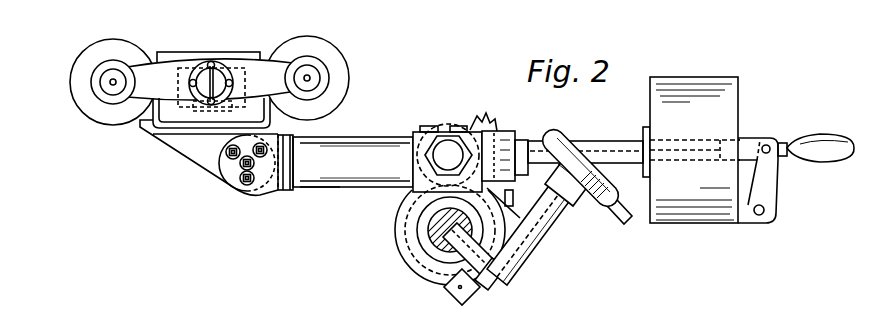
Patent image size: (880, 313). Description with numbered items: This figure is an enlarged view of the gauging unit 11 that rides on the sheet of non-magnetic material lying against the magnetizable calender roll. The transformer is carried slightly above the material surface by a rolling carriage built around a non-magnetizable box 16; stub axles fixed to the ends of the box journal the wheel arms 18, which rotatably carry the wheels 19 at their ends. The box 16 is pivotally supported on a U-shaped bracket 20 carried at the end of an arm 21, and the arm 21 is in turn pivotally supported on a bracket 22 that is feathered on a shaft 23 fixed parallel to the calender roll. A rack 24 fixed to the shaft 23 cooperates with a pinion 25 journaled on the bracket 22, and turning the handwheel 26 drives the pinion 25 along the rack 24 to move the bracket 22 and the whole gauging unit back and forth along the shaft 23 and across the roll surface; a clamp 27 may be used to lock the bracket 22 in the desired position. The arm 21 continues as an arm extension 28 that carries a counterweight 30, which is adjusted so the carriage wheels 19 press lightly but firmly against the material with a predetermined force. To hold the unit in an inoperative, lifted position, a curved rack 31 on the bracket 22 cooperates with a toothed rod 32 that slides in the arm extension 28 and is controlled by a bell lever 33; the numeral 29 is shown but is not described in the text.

The gauging unit 11 is at (335, 198).
The non-magnetizable box 16 is at (230, 52).
The wheel arms 18 is at (118, 158).
The wheels 19 is at (124, 40).
The U-shaped bracket 20 is at (158, 138).
The arm 21 is at (340, 136).
The bracket 22 is at (395, 210).
The shaft 23 is at (432, 226).
The rack 24 is at (455, 255).
The pinion 25 is at (505, 277).
The handwheel 26 is at (600, 198).
The clamp 27 is at (598, 168).
The arm extension 28 is at (585, 140).
The clamp 29 is at (469, 4).
The counterweight 30 is at (735, 90).
The curved rack 31 is at (487, 125).
The toothed rod 32 is at (610, 140).
The bell lever 33 is at (826, 157).